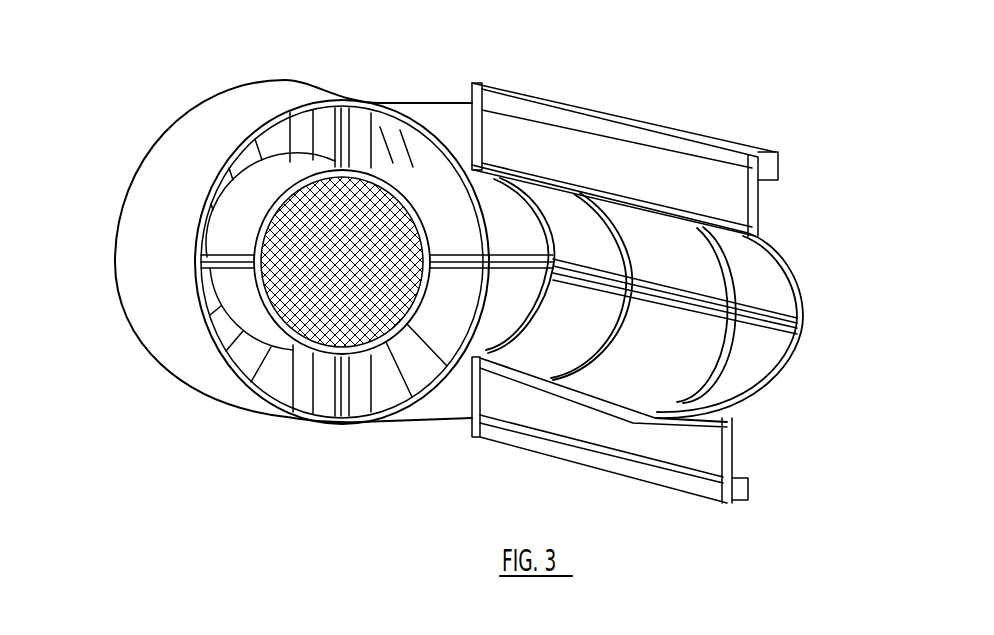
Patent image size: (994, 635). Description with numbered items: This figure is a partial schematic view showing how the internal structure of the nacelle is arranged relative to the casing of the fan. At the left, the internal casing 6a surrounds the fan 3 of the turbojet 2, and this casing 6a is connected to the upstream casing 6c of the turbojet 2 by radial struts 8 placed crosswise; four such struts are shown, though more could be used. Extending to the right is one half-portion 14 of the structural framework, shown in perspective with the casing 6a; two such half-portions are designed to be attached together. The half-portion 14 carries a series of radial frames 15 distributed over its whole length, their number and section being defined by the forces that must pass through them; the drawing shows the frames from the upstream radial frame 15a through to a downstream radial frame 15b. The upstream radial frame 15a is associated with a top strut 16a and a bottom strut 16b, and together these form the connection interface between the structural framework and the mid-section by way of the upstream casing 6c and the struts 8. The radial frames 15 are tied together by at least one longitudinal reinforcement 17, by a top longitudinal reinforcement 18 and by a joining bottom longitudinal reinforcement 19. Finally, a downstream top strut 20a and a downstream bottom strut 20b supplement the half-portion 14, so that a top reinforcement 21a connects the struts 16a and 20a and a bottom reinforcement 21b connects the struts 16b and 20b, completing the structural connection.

The turbojet 2 is at (287, 347).
The fan 3 is at (277, 142).
The internal casing 6a is at (172, 167).
The upstream casing 6c is at (200, 338).
The radial struts 8 is at (328, 120).
The half-portion 14 is at (652, 100).
The radial frames 15 is at (745, 284).
The upstream radial frame 15a is at (537, 335).
The tube rear end 15b is at (816, 335).
The top strut 16a is at (486, 132).
The bottom strut 16b is at (476, 400).
The longitudinal reinforcement 17 is at (684, 302).
The top longitudinal reinforcement 18 is at (638, 198).
The joining bottom longitudinal reinforcement 19 is at (636, 420).
The downstream top strut 20a is at (760, 193).
The downstream bottom strut 20b is at (732, 450).
The top reinforcement 21a is at (587, 123).
The bottom reinforcement 21b is at (592, 440).